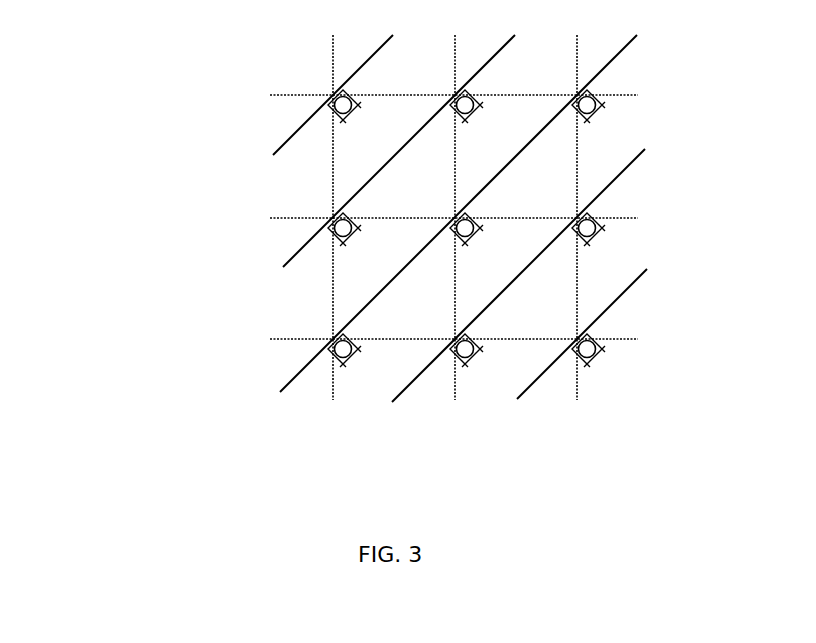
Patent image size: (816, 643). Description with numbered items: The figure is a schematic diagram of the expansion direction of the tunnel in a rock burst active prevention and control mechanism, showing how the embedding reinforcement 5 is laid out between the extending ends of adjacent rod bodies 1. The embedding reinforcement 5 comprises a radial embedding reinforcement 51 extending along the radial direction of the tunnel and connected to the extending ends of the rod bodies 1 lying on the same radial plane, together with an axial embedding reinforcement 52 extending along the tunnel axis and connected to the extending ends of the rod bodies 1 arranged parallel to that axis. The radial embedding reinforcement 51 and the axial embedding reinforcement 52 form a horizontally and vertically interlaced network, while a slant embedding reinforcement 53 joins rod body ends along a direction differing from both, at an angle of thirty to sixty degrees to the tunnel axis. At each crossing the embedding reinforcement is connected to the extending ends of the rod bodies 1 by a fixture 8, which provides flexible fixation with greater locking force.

The rod bodies 1 is at (603, 105).
The fixture 8 is at (603, 228).
The embedding reinforcement 5 is at (334, 273).
The radial embedding reinforcement 51 is at (255, 118).
The axial embedding reinforcement 52 is at (455, 400).
The slant embedding reinforcement 53 is at (421, 218).